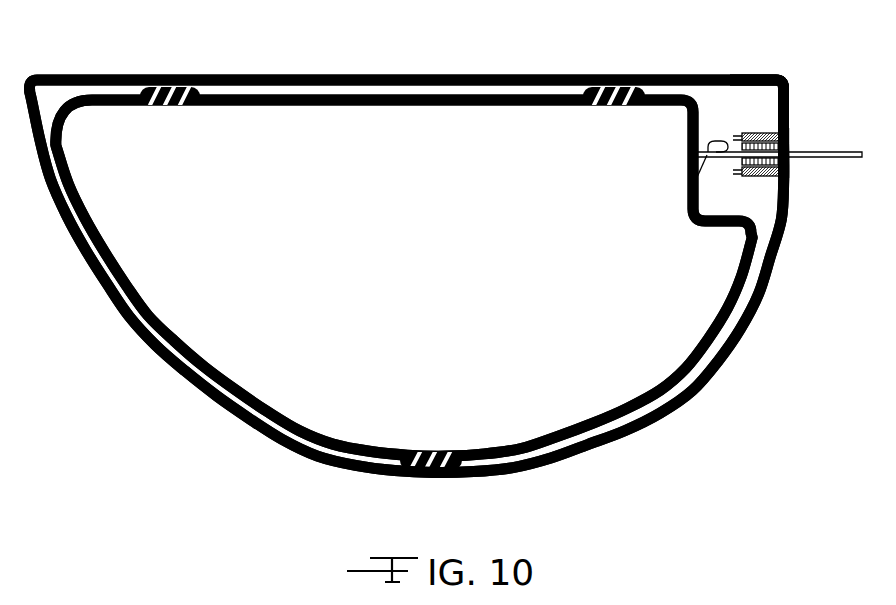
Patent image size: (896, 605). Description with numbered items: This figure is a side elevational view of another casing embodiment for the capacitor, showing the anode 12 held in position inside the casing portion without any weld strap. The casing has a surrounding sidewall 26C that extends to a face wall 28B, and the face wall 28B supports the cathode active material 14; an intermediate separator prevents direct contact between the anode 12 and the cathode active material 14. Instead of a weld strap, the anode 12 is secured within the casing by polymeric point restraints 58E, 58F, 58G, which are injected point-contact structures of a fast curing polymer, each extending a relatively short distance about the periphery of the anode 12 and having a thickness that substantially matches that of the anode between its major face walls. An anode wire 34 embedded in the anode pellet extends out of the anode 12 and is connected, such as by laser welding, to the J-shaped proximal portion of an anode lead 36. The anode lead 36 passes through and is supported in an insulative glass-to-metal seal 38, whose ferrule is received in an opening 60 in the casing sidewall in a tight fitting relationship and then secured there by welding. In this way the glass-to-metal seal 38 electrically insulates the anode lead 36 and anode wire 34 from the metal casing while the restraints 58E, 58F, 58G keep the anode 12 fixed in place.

The anode 12 is at (446, 274).
The cathode active material 14 is at (696, 128).
The surrounding sidewall 26C is at (527, 80).
The face wall 28B is at (760, 103).
The anode wire 34 is at (690, 193).
The anode lead 36 is at (824, 150).
The glass-to-metal seal 38 is at (800, 140).
The polymeric point restraint 58E is at (172, 86).
The polymeric point restraint 58F is at (431, 470).
The polymeric point restraint 58G is at (628, 83).
The opening 60 is at (785, 172).